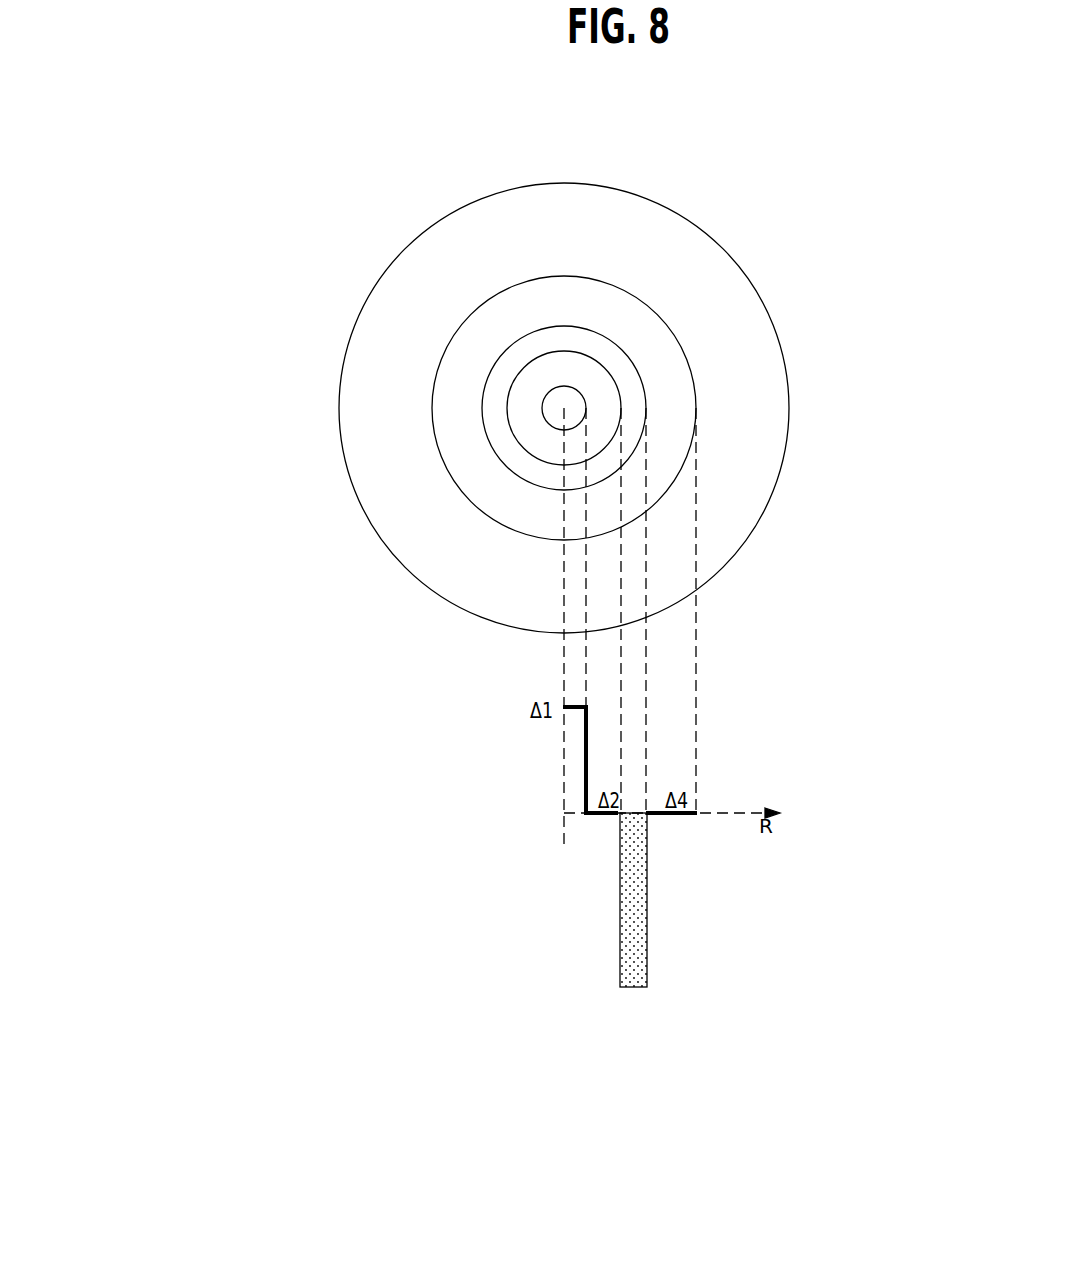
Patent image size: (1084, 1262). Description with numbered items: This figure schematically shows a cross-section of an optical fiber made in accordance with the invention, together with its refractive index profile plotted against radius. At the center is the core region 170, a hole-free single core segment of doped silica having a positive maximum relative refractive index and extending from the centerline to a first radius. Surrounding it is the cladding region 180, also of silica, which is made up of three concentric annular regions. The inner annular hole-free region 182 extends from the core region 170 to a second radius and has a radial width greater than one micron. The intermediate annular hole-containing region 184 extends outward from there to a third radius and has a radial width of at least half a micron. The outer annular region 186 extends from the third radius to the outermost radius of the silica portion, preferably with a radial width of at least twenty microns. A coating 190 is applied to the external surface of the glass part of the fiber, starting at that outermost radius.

The core region 170 is at (552, 410).
The cladding region 180 is at (425, 700).
The inner annular hole-free region 182 is at (522, 407).
The intermediate annular hole-containing region 184 is at (500, 387).
The outer annular region 186 is at (472, 353).
The outer boundary 190 is at (725, 420).